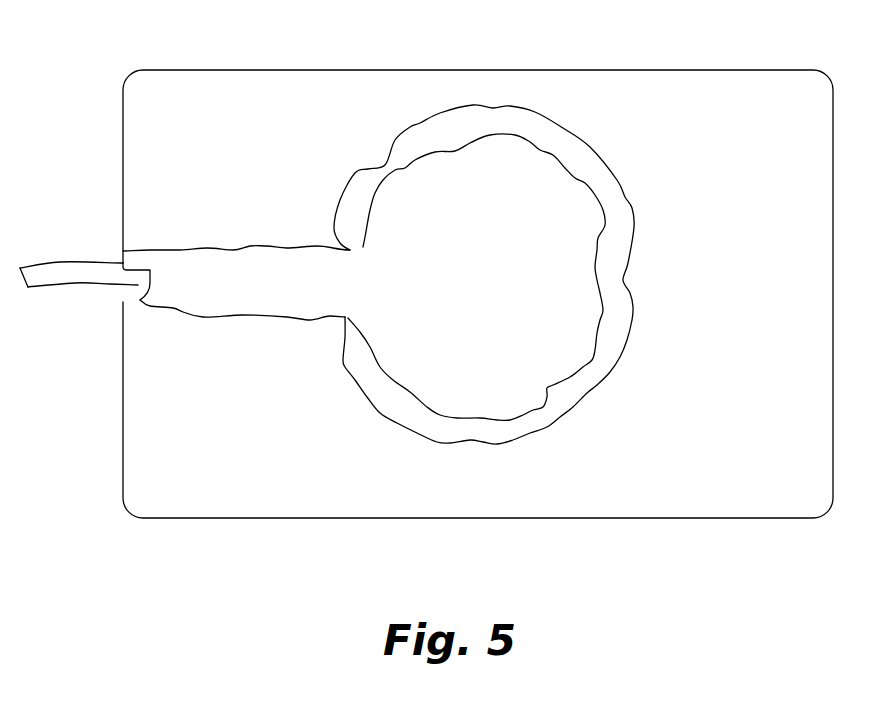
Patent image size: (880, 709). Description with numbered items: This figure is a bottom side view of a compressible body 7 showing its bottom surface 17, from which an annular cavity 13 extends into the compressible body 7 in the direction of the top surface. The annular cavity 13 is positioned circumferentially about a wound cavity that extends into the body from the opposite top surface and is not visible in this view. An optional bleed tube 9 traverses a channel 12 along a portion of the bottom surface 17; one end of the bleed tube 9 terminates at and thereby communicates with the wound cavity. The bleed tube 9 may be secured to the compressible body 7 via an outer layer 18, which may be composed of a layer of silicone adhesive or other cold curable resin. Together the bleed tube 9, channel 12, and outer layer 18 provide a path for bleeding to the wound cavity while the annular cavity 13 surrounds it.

The compressible body 7 is at (124, 451).
The bottom surface 17 is at (145, 140).
The outer layer 18 is at (303, 287).
The annular cavity 13 is at (363, 368).
The bleed tube 9 is at (88, 268).
The channel 12 is at (138, 300).